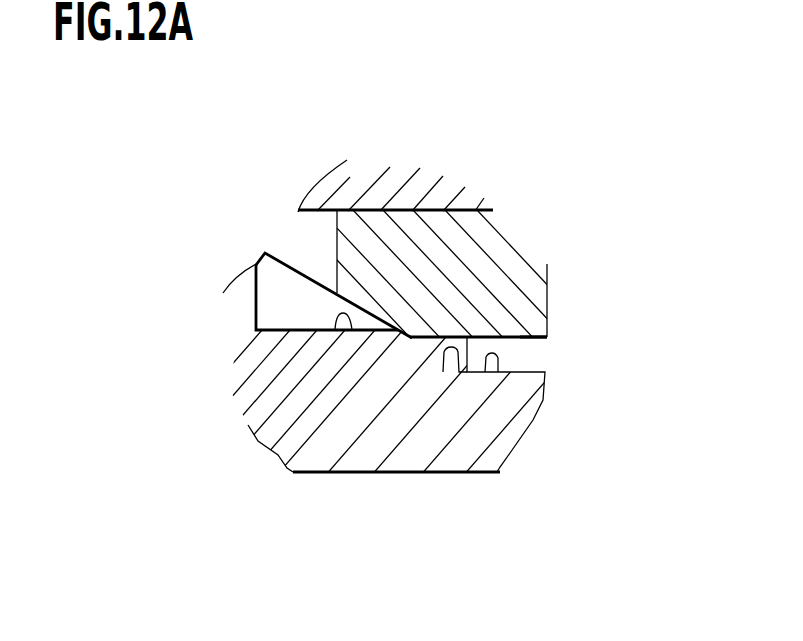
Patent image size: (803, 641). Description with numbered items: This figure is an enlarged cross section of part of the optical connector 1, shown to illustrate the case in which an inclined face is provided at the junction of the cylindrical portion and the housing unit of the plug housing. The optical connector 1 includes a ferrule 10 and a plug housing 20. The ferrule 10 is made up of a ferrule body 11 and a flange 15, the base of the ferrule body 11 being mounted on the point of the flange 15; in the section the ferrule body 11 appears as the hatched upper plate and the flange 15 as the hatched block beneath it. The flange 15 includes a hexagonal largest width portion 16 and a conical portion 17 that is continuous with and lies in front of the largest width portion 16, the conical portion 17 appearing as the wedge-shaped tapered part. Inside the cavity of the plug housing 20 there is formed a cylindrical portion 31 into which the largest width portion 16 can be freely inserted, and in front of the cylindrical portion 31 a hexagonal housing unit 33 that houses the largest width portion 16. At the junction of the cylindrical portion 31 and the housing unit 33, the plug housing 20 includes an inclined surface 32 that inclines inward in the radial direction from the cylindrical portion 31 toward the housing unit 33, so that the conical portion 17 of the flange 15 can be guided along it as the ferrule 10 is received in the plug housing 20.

The optical connector 1 is at (449, 138).
The ferrule 10 is at (612, 142).
The ferrule body 11 is at (443, 185).
The flange 15 is at (513, 300).
The largest width portion 16 is at (525, 338).
The conical portion 17 is at (318, 287).
The plug housing 20 is at (370, 476).
The cylindrical portion 31 is at (493, 357).
The inclined surface 32 is at (452, 349).
The housing unit 33 is at (341, 316).